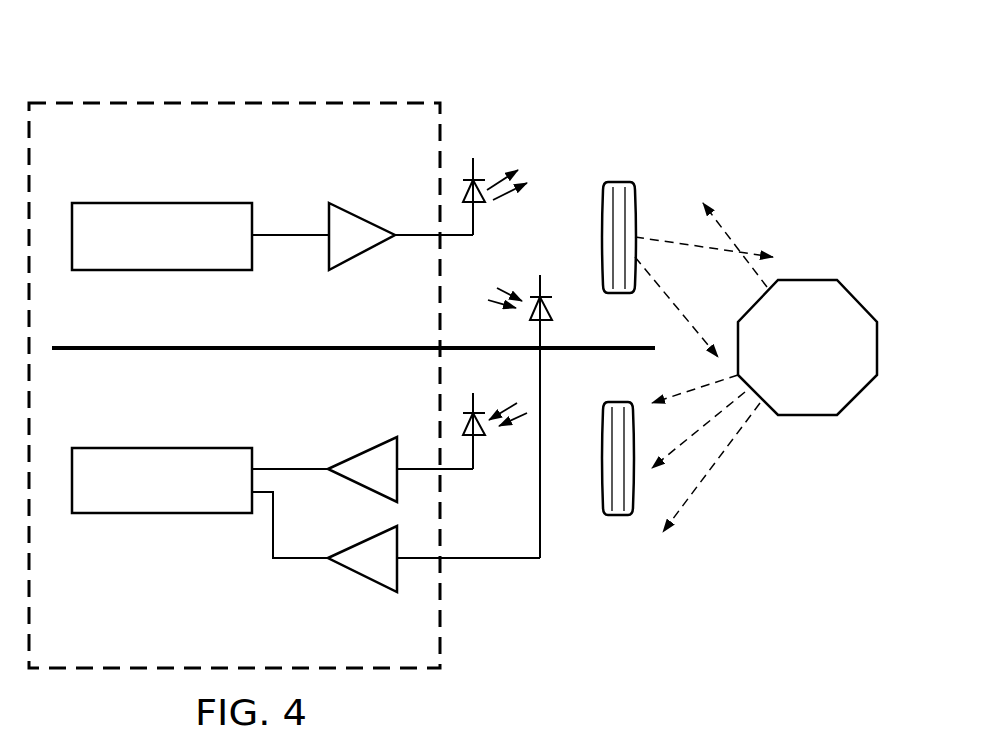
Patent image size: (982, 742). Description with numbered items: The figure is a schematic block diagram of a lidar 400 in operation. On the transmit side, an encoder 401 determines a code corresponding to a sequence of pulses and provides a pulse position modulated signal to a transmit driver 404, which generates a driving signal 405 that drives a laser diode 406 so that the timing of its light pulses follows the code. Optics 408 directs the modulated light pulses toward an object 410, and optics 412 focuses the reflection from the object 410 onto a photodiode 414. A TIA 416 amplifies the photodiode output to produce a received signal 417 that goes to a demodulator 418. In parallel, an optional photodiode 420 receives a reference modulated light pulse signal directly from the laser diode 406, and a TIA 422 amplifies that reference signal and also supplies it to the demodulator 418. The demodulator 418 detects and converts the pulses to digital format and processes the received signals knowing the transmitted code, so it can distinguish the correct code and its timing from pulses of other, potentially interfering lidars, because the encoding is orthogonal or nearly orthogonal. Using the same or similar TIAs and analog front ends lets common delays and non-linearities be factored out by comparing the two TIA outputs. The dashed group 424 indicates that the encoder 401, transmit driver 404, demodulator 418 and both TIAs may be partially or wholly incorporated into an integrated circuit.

The lidar 400 is at (565, 90).
The encoder 401 is at (162, 203).
The transmit driver 404 is at (362, 218).
The driving signal 405 is at (294, 233).
The laser diode 406 is at (480, 206).
The optics 408 is at (620, 182).
The object 410 is at (787, 364).
The optics 412 is at (620, 515).
The photodiode 414 is at (478, 440).
The TIA 416 is at (363, 452).
The received signal 417 is at (294, 467).
The demodulator 418 is at (165, 513).
The photodiode 420 is at (552, 312).
The TIA 422 is at (360, 576).
The group 424 is at (112, 100).